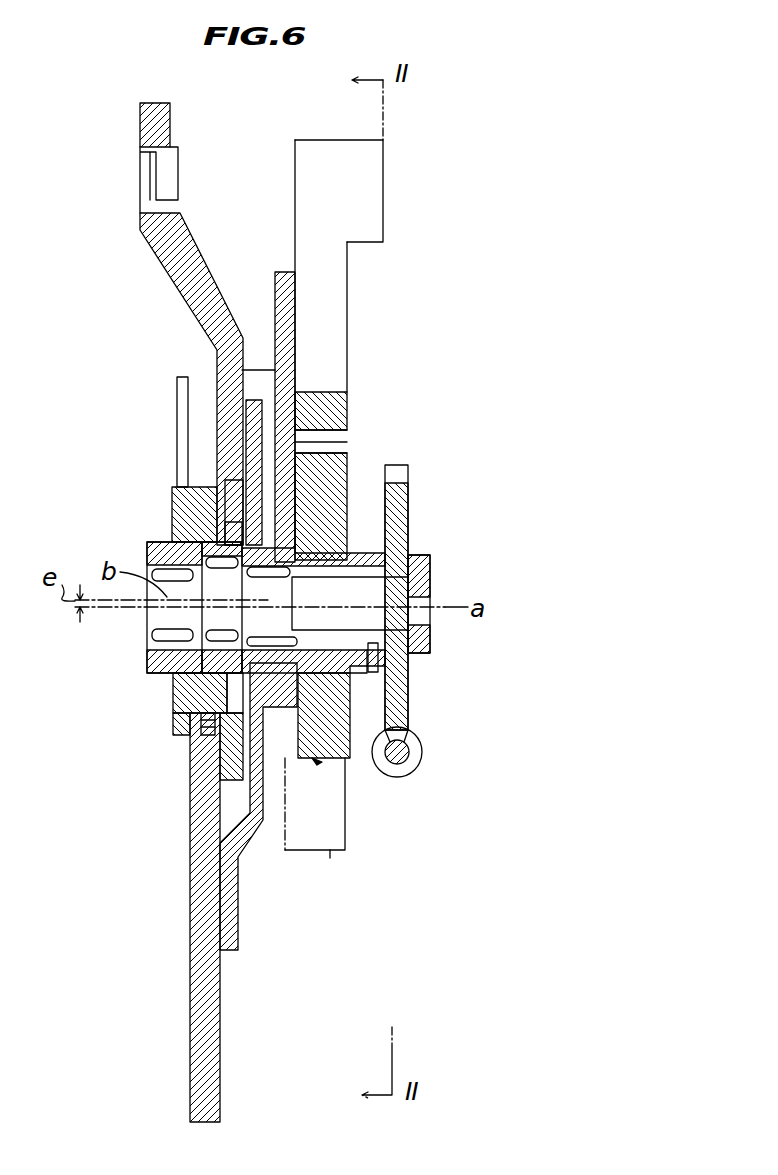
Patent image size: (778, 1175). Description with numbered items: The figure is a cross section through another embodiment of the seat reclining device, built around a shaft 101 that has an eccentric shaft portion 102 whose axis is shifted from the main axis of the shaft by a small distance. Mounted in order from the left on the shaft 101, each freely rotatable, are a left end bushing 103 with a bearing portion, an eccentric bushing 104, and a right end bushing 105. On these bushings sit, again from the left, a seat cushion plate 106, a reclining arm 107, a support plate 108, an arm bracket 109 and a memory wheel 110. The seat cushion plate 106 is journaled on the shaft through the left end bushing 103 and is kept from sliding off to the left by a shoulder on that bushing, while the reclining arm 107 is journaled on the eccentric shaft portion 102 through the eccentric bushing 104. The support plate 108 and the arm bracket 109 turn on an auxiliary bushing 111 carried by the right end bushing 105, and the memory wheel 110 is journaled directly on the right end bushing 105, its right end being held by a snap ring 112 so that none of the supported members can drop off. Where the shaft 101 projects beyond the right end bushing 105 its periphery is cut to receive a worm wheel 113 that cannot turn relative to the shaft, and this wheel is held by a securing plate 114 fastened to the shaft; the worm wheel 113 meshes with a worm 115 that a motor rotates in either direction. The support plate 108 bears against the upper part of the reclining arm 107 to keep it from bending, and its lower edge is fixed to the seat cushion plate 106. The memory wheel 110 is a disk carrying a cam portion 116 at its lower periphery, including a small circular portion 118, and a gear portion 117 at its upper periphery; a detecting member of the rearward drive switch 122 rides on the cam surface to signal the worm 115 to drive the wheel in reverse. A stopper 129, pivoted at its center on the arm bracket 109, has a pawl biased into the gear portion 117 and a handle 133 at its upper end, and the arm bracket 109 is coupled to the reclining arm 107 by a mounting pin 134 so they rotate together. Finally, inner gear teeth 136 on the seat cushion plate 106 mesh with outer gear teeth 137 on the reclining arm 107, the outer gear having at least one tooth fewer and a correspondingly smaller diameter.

The shaft 101 is at (395, 592).
The eccentric shaft portion 102 is at (210, 577).
The left end bushing 103 is at (150, 662).
The eccentric bushing 104 is at (200, 668).
The right end bushing 105 is at (333, 567).
The seat cushion plate 106 is at (197, 867).
The reclining arm 107 is at (163, 237).
The support plate 108 is at (267, 803).
The arm bracket 109 is at (283, 275).
The memory wheel 110 is at (340, 462).
The auxiliary bushing 111 is at (197, 523).
The snap ring 112 is at (373, 672).
The worm wheel 113 is at (398, 508).
The securing plate 114 is at (435, 642).
The worm 115 is at (422, 752).
The cam portion 116 is at (318, 770).
The gear portion 117 is at (345, 445).
The small circular portion 118 is at (338, 765).
The rearward drive switch 122 is at (330, 858).
The stopper 129 is at (340, 298).
The handle 133 is at (370, 211).
The mounting pin 134 is at (256, 395).
The inner gear teeth 136 is at (190, 747).
The outer gear teeth 137 is at (210, 730).